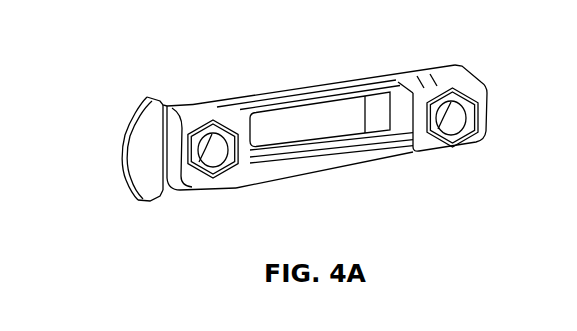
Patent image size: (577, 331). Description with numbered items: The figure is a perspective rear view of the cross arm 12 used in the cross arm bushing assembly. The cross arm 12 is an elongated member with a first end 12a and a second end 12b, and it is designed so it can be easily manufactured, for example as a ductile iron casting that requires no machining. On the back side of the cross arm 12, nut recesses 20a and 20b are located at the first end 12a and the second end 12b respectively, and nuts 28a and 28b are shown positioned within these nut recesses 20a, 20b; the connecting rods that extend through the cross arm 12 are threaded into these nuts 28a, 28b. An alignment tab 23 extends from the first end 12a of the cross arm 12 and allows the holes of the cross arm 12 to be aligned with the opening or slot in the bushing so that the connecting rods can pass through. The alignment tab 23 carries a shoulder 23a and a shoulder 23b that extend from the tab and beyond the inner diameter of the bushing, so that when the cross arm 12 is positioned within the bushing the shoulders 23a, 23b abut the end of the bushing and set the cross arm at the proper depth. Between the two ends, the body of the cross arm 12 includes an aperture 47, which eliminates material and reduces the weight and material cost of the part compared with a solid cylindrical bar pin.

The cross arm 12 is at (328, 162).
The first end 12a is at (140, 184).
The second end 12b is at (478, 82).
The nut recess 20a is at (200, 150).
The nut recess 20b is at (478, 110).
The alignment tab 23 is at (128, 116).
The shoulder 23a is at (162, 100).
The shoulder 23b is at (165, 190).
The nut 28a is at (213, 180).
The nut 28b is at (453, 143).
The aperture 47 is at (325, 118).